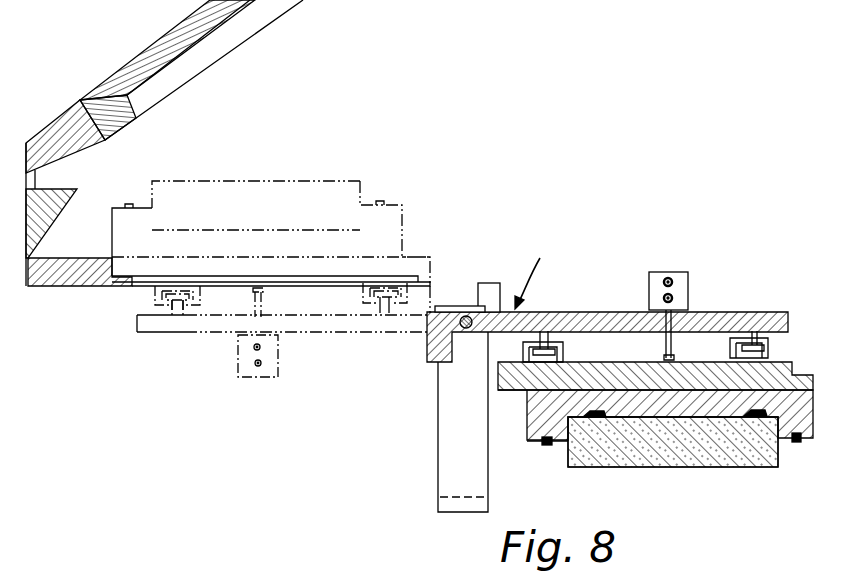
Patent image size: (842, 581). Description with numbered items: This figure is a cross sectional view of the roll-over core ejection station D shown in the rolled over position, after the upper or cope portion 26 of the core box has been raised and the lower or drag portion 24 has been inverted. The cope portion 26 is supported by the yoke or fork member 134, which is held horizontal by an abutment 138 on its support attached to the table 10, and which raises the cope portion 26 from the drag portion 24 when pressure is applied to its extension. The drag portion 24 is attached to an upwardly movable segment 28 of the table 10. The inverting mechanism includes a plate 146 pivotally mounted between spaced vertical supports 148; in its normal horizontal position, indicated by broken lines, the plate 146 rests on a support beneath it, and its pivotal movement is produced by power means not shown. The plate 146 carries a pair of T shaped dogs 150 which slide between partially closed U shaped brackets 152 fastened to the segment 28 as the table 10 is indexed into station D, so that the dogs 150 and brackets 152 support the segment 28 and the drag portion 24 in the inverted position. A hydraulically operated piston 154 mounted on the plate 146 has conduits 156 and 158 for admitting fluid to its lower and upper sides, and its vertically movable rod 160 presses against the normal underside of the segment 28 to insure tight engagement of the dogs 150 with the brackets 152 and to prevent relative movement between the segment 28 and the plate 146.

The table 10 is at (67, 278).
The lower or drag portion 24 is at (395, 217).
The upper or cope portion 26 is at (160, 57).
The upwardly movable segment 28 is at (777, 361).
The yoke or fork member 134 is at (45, 128).
The abutment 138 is at (70, 189).
The plate 146 is at (303, 332).
The vertical supports 148 is at (457, 462).
The T shaped dogs 150 is at (167, 312).
The U shaped brackets 152 is at (158, 298).
The hydraulically operated piston 154 is at (248, 362).
The conduit 156 is at (653, 296).
The conduit 158 is at (668, 282).
The rod 160 is at (255, 300).
The station D is at (536, 274).